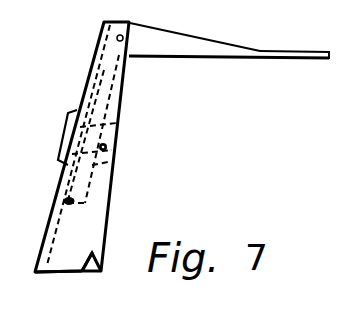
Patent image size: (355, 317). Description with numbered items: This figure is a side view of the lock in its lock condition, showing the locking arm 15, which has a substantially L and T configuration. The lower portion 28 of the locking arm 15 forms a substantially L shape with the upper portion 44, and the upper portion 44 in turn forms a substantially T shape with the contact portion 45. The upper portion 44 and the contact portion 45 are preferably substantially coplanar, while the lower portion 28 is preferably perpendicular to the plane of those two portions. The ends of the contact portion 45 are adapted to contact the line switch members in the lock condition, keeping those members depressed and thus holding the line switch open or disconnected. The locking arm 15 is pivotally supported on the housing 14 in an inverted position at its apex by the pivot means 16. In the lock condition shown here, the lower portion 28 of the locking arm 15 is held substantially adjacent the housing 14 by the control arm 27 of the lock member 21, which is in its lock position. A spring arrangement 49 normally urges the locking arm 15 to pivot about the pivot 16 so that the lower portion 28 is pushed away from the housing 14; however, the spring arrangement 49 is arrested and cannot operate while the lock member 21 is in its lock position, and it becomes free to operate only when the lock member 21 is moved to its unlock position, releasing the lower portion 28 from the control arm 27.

The housing 14 is at (67, 257).
The locking arm 15 is at (172, 97).
The pivot means 16 is at (117, 38).
The lock member 21 is at (115, 127).
The control arm 27 is at (107, 150).
The lower portion 28 is at (82, 183).
The upper portion 44 is at (200, 43).
The contact portion 45 is at (290, 52).
The spring arrangement 49 is at (70, 205).